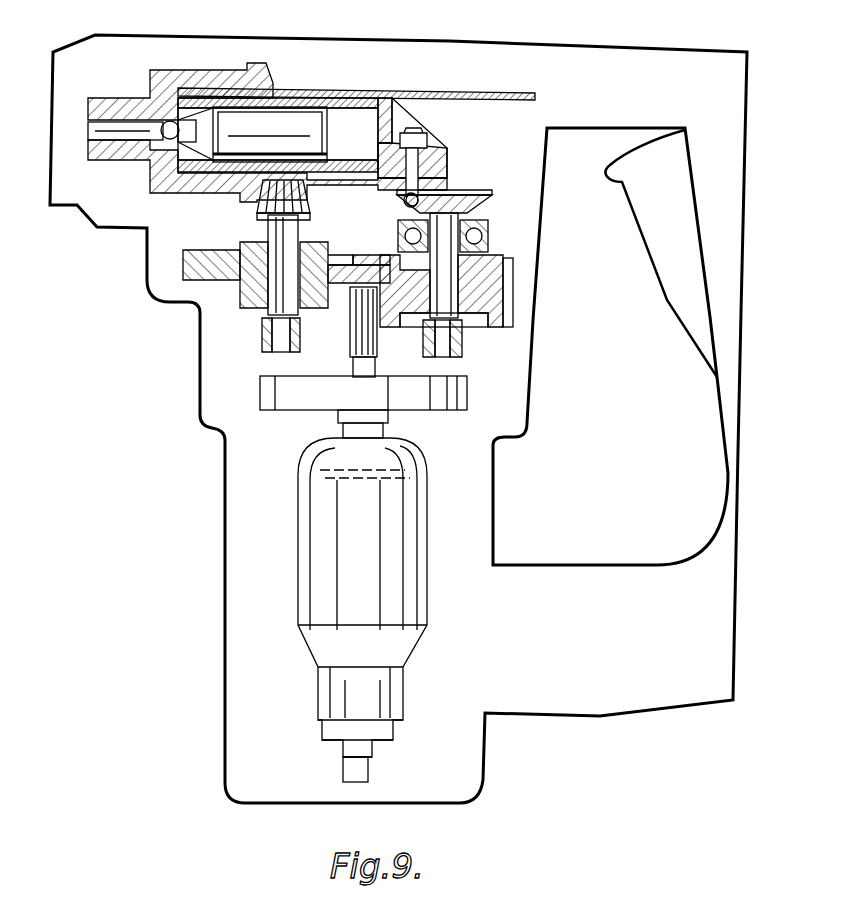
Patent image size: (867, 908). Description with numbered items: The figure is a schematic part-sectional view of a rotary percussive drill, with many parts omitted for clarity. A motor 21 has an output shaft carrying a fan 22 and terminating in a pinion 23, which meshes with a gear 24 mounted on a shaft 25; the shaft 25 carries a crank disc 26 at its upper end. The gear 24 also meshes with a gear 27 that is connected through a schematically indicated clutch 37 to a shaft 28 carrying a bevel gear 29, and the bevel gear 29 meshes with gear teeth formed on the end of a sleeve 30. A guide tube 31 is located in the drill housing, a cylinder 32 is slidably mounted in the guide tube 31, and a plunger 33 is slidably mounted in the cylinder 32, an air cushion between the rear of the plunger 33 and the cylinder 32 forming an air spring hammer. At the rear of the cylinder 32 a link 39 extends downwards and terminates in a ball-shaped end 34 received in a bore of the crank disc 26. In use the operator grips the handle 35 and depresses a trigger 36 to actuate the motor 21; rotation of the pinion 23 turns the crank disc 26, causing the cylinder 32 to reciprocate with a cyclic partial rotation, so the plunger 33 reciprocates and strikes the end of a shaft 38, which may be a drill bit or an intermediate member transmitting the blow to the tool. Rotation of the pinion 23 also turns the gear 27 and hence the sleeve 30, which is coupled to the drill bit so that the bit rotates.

The motor 21 is at (303, 555).
The fan 22 is at (300, 402).
The pinion 23 is at (355, 335).
The gear 24 is at (497, 327).
The shaft 25 is at (455, 262).
The crank disc 26 is at (480, 204).
The gear 27 is at (203, 278).
The shaft 28 is at (268, 232).
The bevel gear 29 is at (310, 196).
The sleeve 30 is at (190, 72).
The guide tube 31 is at (450, 91).
The cylinder 32 is at (384, 98).
The plunger 33 is at (302, 118).
The ball-shaped end 34 is at (405, 207).
The handle 35 is at (593, 582).
The trigger 36 is at (692, 340).
The clutch 37 is at (243, 305).
The shaft 38 is at (118, 122).
The link 39 is at (415, 146).